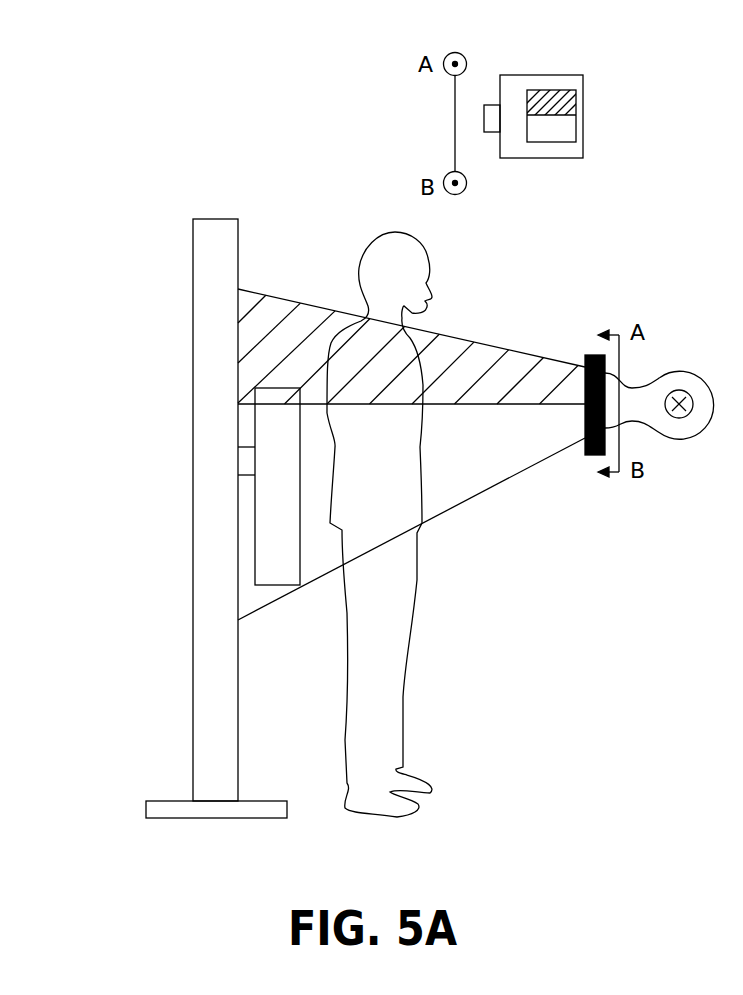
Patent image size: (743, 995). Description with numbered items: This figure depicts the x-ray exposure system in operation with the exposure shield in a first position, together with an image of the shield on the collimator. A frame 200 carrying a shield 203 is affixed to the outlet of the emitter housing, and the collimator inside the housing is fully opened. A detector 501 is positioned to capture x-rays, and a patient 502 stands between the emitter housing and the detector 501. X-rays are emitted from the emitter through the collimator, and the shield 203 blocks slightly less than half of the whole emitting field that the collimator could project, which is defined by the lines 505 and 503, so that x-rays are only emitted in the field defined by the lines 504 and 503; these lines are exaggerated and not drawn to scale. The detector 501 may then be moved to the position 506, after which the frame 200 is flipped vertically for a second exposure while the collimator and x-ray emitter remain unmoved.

The frame 200 is at (588, 455).
The shield 203 is at (576, 102).
The detector 501 is at (255, 530).
The patient 502 is at (404, 763).
The line 503 is at (445, 515).
The line 504 is at (465, 406).
The line 505 is at (483, 347).
The position 506 is at (685, 440).